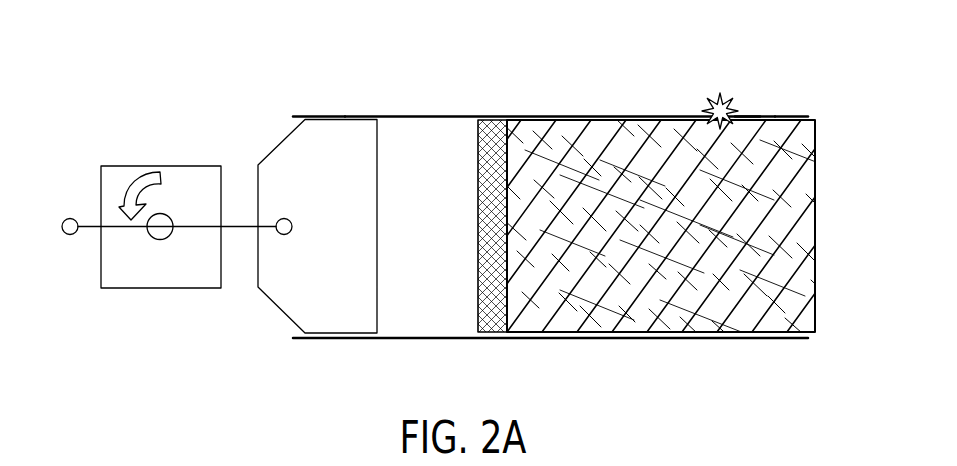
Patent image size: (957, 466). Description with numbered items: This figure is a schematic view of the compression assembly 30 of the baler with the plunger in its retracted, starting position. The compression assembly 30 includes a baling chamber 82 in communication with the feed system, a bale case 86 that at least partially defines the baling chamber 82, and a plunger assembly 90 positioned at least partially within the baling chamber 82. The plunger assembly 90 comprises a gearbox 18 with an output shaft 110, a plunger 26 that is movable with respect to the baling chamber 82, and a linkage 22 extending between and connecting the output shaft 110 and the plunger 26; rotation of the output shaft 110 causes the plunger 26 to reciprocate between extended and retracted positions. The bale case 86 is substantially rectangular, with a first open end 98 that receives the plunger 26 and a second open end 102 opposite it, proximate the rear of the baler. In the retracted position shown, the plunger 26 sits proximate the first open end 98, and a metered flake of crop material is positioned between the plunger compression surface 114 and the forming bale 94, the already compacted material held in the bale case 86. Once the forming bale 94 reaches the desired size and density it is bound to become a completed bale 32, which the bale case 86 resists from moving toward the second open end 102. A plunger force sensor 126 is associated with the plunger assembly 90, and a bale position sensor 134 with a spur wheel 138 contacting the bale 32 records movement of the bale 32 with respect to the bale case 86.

The gearbox 18 is at (112, 288).
The linkage 22 is at (245, 229).
The plunger 26 is at (290, 308).
The compression assembly 30 is at (405, 85).
The bale 32 is at (807, 205).
The baling chamber 82 is at (422, 315).
The bale case 86 is at (607, 115).
The plunger assembly 90 is at (180, 118).
The forming bale 94 is at (493, 127).
The first open end 98 is at (307, 117).
The second open end 102 is at (797, 118).
The output shaft 110 is at (160, 240).
The plunger compression surface 114 is at (395, 210).
The plunger force sensor 126 is at (285, 214).
The bale position sensor 134 is at (727, 93).
The spur wheel 138 is at (735, 113).